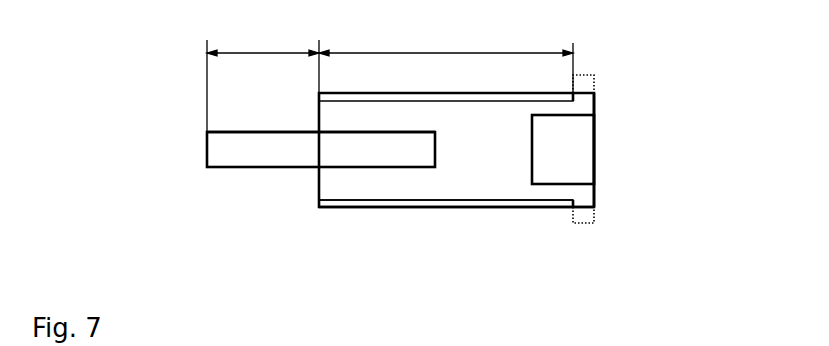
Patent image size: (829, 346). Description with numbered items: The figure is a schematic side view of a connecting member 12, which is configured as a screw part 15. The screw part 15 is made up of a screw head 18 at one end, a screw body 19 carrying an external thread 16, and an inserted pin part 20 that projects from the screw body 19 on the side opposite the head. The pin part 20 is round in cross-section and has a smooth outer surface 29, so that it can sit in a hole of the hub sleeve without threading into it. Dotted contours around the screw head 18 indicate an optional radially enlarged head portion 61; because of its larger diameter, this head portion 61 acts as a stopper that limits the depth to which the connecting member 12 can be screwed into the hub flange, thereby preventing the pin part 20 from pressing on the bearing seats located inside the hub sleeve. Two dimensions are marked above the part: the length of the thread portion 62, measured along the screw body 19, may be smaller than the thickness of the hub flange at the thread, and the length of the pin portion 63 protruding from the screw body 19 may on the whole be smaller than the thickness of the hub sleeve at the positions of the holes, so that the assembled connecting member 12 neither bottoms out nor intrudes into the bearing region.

The connecting member 12 is at (603, 145).
The screw part 15 is at (603, 167).
The external thread 16 is at (383, 208).
The screw head 18 is at (585, 110).
The screw body 19 is at (475, 220).
The pin part 20 is at (230, 175).
The smooth outer surface 29 is at (259, 130).
The radially enlarged head portion 61 is at (593, 77).
The thread portion length 62 is at (446, 64).
The pin portion length 63 is at (263, 79).